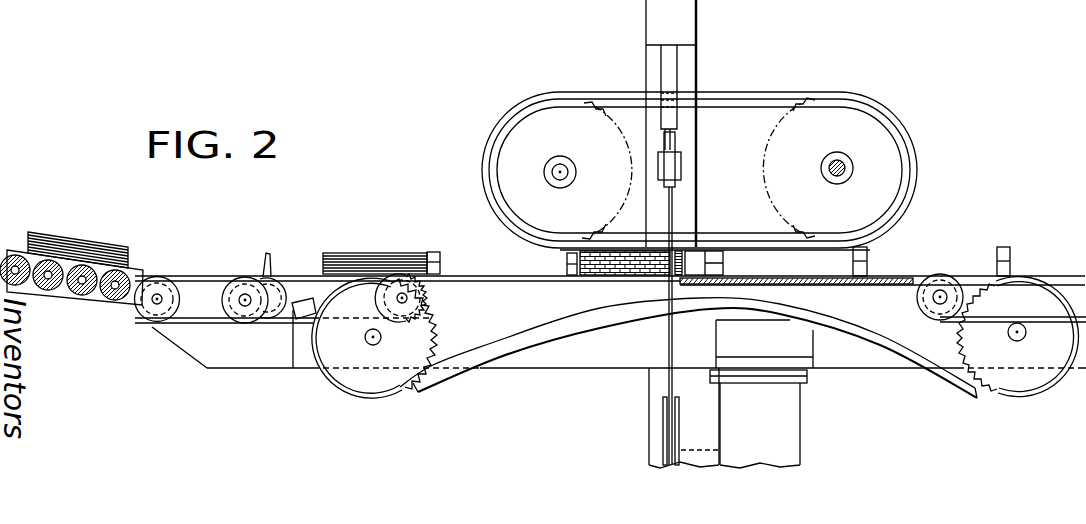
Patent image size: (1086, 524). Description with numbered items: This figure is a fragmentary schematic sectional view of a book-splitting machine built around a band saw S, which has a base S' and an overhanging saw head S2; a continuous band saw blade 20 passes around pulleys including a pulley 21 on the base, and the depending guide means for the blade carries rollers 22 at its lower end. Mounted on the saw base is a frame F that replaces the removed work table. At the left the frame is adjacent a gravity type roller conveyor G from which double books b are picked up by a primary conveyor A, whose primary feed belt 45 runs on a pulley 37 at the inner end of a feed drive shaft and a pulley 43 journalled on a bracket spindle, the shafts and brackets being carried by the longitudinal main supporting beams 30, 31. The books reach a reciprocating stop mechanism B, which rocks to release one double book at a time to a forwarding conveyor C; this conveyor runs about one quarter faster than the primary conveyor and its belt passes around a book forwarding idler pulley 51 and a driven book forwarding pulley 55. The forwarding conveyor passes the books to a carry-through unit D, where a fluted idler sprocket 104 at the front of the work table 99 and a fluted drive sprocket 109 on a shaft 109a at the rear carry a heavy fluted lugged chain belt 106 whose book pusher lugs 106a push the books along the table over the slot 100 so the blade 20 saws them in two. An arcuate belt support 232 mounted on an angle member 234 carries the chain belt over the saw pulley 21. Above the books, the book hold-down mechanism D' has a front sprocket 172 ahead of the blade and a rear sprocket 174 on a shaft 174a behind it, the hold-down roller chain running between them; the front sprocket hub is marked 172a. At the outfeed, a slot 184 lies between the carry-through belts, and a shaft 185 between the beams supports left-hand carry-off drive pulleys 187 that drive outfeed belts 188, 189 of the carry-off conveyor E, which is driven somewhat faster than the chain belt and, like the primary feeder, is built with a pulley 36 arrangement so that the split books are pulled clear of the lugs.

The band saw blade 20 is at (674, 203).
The pulley 21 is at (681, 411).
The rollers 22 is at (682, 162).
The longitudinal main supporting beam 31 is at (268, 312).
The pulley 37 is at (152, 322).
The pulley 43 is at (240, 306).
The primary feed belt 45 is at (185, 276).
The book forwarding idler pulley 51 is at (266, 318).
The driven book forwarding pulley 55 is at (426, 297).
The work table 99 is at (822, 286).
The slot 100 is at (530, 284).
The fluted idler sprocket 104 is at (352, 372).
The fluted lugged chain belt 106 is at (772, 276).
The book pusher lug 106a is at (305, 320).
The fluted drive sprocket 109 is at (1030, 372).
The shaft 109a is at (1016, 336).
The front sprocket 172 is at (538, 128).
The drum shaft 172a is at (562, 181).
The rear sprocket 174 is at (853, 146).
The shaft 174a is at (835, 185).
The slot 184 is at (915, 276).
The shaft 185 is at (938, 300).
The left-hand carry-off drive pulley 187 is at (945, 277).
The outfeed belt 189 is at (978, 278).
The arcuate belt support 232 is at (508, 348).
The angle member 234 is at (803, 343).
The primary conveyor A is at (205, 270).
The reciprocating stop mechanism B is at (279, 253).
The forwarding conveyor C is at (306, 273).
The carry-through unit D is at (436, 244).
The book hold-down mechanism D' is at (699, 148).
The carry-off conveyor E is at (1050, 272).
The frame F is at (561, 372).
The gravity type roller conveyor G is at (92, 297).
The band saw S is at (698, 123).
The base S' is at (653, 418).
The overhanging saw head S2 is at (646, 21).
The double book b is at (104, 244).
The longitudinal main supporting beam 30 is at (202, 6).
The pulley 36 is at (280, 6).
The outfeed belt 188 is at (971, 6).